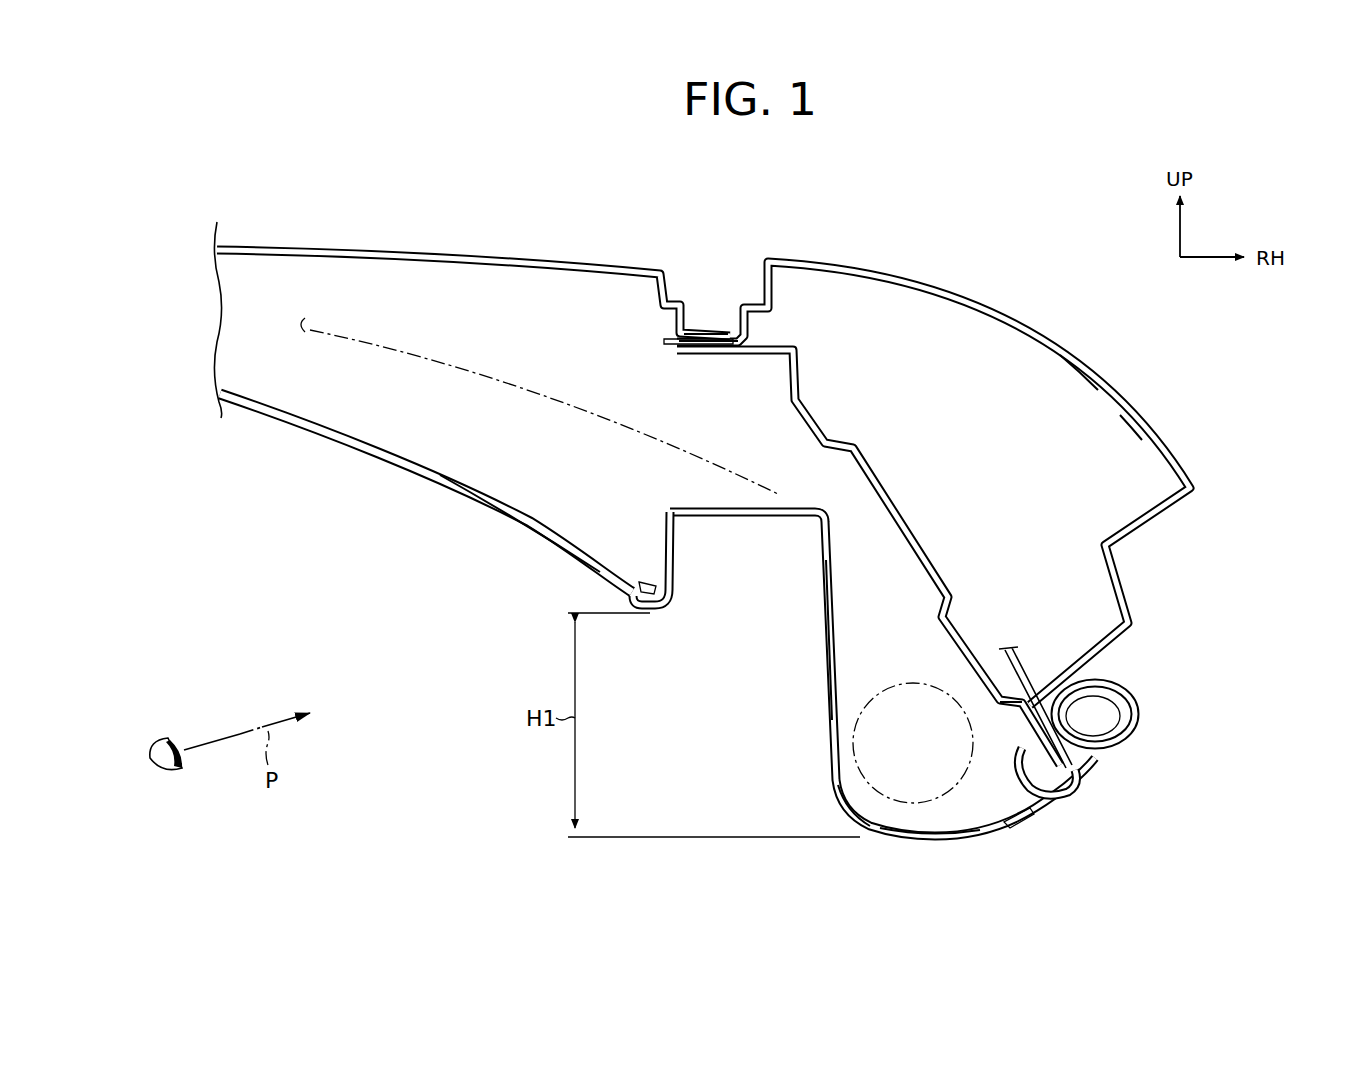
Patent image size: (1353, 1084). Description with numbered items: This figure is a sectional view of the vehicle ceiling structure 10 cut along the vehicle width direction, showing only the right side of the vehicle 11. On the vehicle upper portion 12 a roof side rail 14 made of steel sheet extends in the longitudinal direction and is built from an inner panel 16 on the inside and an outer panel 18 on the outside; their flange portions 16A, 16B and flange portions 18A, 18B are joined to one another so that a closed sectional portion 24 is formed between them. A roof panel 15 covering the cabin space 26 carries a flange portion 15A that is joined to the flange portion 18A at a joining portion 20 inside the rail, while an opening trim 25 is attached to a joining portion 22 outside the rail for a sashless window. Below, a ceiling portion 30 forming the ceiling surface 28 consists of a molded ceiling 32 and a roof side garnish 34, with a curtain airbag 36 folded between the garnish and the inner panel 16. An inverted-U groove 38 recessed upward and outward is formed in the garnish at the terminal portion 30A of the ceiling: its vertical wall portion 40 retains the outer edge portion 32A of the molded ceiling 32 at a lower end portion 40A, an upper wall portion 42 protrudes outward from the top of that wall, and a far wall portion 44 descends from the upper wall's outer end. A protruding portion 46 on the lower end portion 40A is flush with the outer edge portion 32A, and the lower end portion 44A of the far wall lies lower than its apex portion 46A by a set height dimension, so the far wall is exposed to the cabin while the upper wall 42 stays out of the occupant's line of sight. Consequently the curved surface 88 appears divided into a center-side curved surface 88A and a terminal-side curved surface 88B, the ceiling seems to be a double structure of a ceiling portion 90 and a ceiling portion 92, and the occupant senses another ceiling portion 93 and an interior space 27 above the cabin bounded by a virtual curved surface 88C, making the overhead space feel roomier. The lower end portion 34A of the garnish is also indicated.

The vehicle ceiling structure 10 is at (708, 726).
The vehicle 11 is at (930, 282).
The vehicle upper portion 12 is at (976, 280).
The roof side rail 14 is at (1092, 382).
The roof panel 15 is at (476, 257).
The flange portion 15A is at (692, 328).
The inner panel 16 is at (794, 426).
The flange portion 16A is at (716, 350).
The flange portion 16B is at (1008, 718).
The outer panel 18 is at (1137, 427).
The flange portion 18A is at (705, 336).
The flange portion 18B is at (1074, 740).
The joining portion 20 is at (654, 342).
The joining portion 22 is at (1014, 662).
The closed sectional portion 24 is at (998, 462).
The opening trim 25 is at (1134, 741).
The cabin space 26 is at (455, 668).
The interior space 27 is at (507, 428).
The ceiling surface 28 is at (367, 448).
The ceiling portion 30 is at (415, 498).
The terminal portion 30A is at (1056, 812).
The molded ceiling 32 is at (498, 535).
The outer edge portion 32A is at (644, 591).
The roof side garnish 34 is at (868, 826).
The lower wall end 34A is at (1009, 834).
The airbag 36 is at (880, 686).
The groove 38 is at (754, 632).
The vertical wall portion 40 is at (674, 552).
The lower end portion 40A is at (648, 612).
The upper wall portion 42 is at (772, 515).
The far wall portion 44 is at (822, 602).
The lower end portion 44A is at (926, 838).
The protruding portion 46 is at (652, 602).
The apex portion 46A is at (660, 611).
The curved surface 88 is at (320, 447).
The curved surface 88A is at (325, 441).
The curved surface 88B is at (825, 742).
The virtual curved surface 88C is at (612, 430).
The ceiling portion 90 is at (300, 420).
The ceiling portion 92 is at (824, 680).
The ceiling portion 93 is at (567, 408).